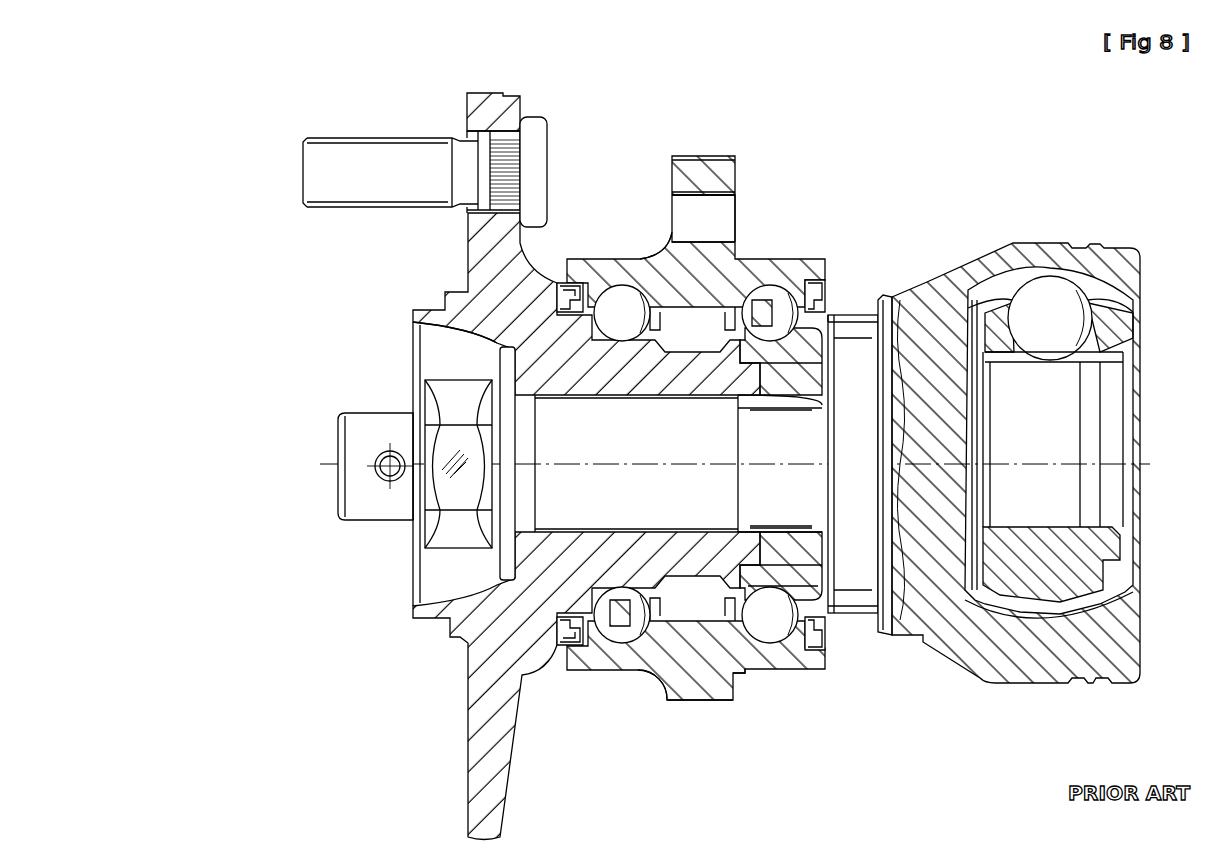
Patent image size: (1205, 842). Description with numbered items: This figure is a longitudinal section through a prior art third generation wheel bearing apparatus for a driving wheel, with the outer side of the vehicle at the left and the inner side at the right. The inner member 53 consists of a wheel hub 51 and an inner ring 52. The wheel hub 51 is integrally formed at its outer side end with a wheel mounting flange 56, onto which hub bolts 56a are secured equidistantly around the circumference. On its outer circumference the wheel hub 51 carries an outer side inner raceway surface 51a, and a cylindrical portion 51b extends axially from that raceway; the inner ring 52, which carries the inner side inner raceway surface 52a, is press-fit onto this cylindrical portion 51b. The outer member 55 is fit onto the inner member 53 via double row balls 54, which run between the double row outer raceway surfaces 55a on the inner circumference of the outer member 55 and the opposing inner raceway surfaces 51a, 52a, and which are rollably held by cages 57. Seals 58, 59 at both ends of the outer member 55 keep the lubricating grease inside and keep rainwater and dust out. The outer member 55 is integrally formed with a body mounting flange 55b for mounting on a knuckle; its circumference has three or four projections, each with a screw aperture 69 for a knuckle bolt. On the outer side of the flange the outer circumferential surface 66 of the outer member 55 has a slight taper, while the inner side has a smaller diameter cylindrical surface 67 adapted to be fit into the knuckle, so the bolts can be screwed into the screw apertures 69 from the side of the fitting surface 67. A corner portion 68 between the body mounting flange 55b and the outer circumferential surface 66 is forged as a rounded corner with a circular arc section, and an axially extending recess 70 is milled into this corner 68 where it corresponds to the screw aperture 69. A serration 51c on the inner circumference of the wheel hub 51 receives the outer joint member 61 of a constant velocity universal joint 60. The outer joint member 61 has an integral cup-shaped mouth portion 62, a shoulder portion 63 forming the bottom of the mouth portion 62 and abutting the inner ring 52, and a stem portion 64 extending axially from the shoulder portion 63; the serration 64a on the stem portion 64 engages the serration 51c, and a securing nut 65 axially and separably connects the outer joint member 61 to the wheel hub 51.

The wheel hub 51 is at (497, 368).
The outer side inner raceway surface 51a is at (497, 343).
The cylindrical portion 51b is at (790, 398).
The serration 51c is at (635, 400).
The inner ring 52 is at (855, 325).
The inner side inner raceway surface 52a is at (828, 312).
The inner member 53 is at (497, 566).
The balls 54 is at (750, 630).
The outer member 55 is at (740, 275).
The outer raceway surfaces 55a is at (612, 305).
The body mounting flange 55b is at (712, 178).
The wheel mounting flange 56 is at (495, 110).
The hub bolts 56a is at (385, 155).
The cages 57 is at (660, 345).
The seal 58 is at (560, 643).
The seal 59 is at (830, 640).
The constant velocity universal joint 60 is at (1016, 397).
The outer joint member 61 is at (963, 255).
The mouth portion 62 is at (1116, 245).
The shoulder portion 63 is at (893, 290).
The stem portion 64 is at (726, 509).
The serration 64a is at (680, 565).
The securing nut 65 is at (455, 530).
The outer circumferential surface 66 is at (608, 672).
The cylindrical surface 67 is at (780, 672).
The corner portion 68 is at (565, 292).
The screw aperture 69 is at (713, 215).
The recess 70 is at (665, 235).